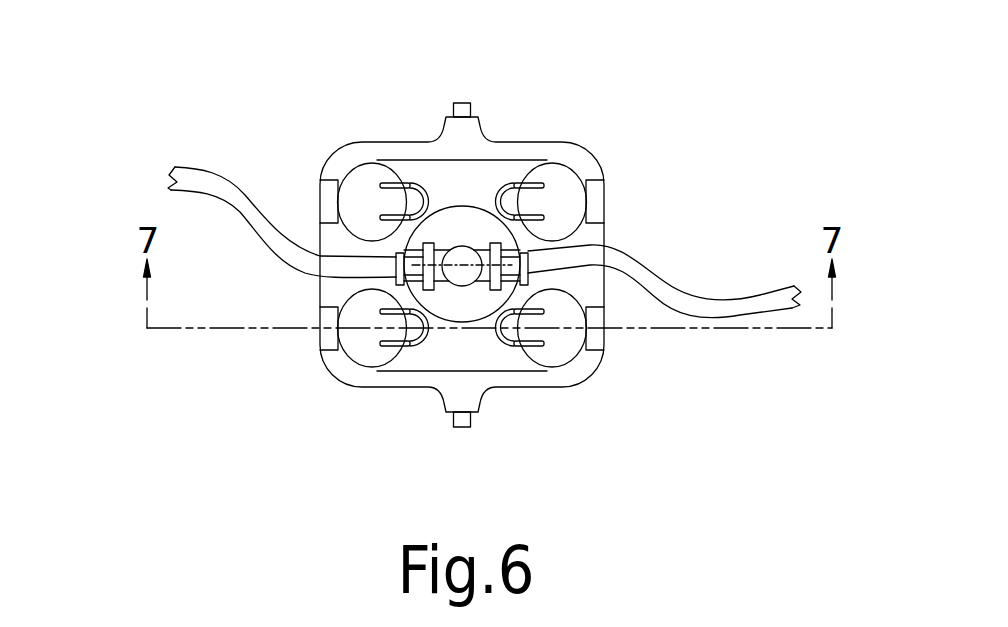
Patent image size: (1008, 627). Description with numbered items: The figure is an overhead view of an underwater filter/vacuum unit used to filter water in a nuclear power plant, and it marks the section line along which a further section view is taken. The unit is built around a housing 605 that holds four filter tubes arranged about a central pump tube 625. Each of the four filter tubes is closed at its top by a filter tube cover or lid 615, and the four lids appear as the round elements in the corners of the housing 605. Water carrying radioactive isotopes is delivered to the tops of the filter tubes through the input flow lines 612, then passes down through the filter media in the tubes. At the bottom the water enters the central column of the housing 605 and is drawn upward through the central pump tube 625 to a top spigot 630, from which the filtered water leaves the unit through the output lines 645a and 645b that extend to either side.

The housing 605 is at (590, 362).
The input flow lines 612 is at (407, 152).
The filter tube cover 615 is at (370, 183).
The central pump tube 625 is at (457, 307).
The top spigot 630 is at (462, 257).
The output line 645a is at (197, 170).
The output line 645b is at (778, 287).